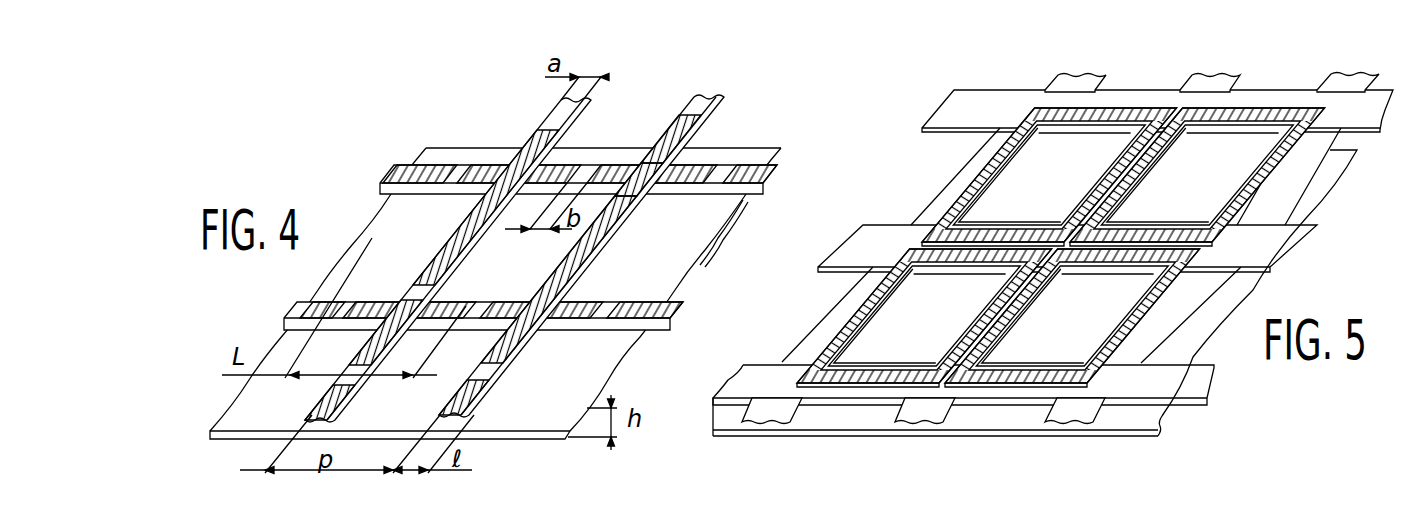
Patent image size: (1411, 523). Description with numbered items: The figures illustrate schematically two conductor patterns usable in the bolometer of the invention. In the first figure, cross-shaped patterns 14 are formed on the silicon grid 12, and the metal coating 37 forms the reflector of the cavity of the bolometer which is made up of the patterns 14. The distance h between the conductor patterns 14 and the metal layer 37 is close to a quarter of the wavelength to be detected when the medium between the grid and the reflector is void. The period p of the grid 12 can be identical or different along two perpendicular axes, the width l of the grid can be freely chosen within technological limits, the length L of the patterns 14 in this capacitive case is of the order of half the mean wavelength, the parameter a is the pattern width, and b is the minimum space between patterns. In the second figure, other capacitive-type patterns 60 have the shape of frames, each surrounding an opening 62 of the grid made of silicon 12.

In FIG. 4, the silicon grid 12 is at (700, 106).
In FIG. 5, the silicon grid 12 is at (1058, 70).
In FIG. 4, the conductor patterns 14 is at (678, 182).
In FIG. 4, the metal coating 37 is at (738, 156).
In FIG. 5, the metal coating 37 is at (870, 418).
In FIG. 5, the patterns 60 is at (1240, 110).
In FIG. 5, the opening 62 is at (928, 293).